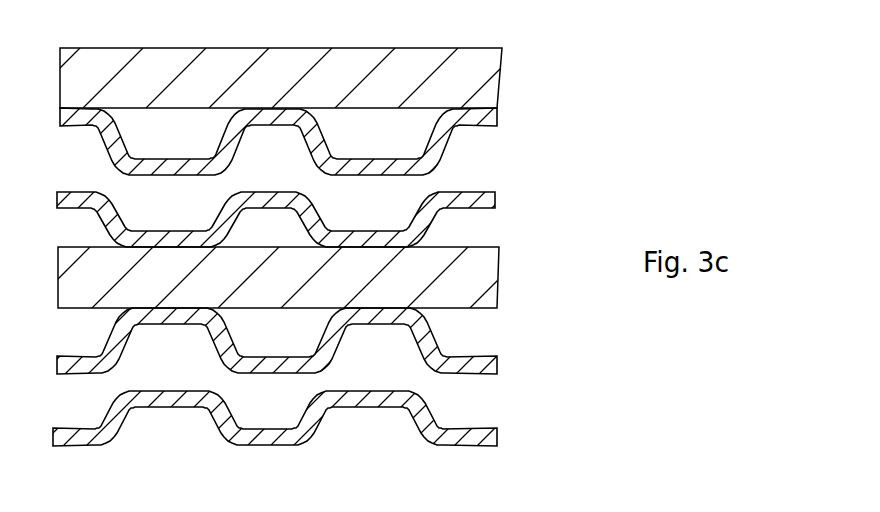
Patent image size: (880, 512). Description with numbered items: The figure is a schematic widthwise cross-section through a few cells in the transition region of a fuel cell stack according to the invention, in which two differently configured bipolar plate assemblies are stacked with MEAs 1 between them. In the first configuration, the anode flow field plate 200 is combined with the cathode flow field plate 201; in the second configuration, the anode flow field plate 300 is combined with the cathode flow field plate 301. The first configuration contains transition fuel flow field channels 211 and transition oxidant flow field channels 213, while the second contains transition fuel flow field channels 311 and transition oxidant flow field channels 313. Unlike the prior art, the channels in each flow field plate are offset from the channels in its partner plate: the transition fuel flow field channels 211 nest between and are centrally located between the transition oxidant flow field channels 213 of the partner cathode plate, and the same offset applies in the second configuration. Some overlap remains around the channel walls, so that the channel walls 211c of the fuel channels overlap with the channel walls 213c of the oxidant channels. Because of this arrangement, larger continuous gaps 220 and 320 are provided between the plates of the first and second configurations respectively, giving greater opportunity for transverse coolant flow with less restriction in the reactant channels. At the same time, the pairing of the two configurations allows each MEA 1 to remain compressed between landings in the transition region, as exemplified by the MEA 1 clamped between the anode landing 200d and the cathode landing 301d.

The MEA 1 is at (472, 68).
The cathode flow field plate 201 is at (497, 112).
The transition oxidant flow field channels 213 is at (185, 144).
The channel walls 213c is at (443, 147).
The anode flow field plate 200 is at (470, 200).
The anode landing 200d is at (368, 233).
The gap 220 is at (185, 218).
The transition fuel flow field channels 211 is at (293, 239).
The channel walls 211c is at (427, 208).
The cathode flow field plate 301 is at (500, 362).
The transition oxidant flow field channels 313 is at (288, 343).
The gap 320 is at (190, 374).
The cathode landing 301d is at (380, 317).
The anode flow field plate 300 is at (497, 437).
The transition fuel flow field channels 311 is at (185, 442).